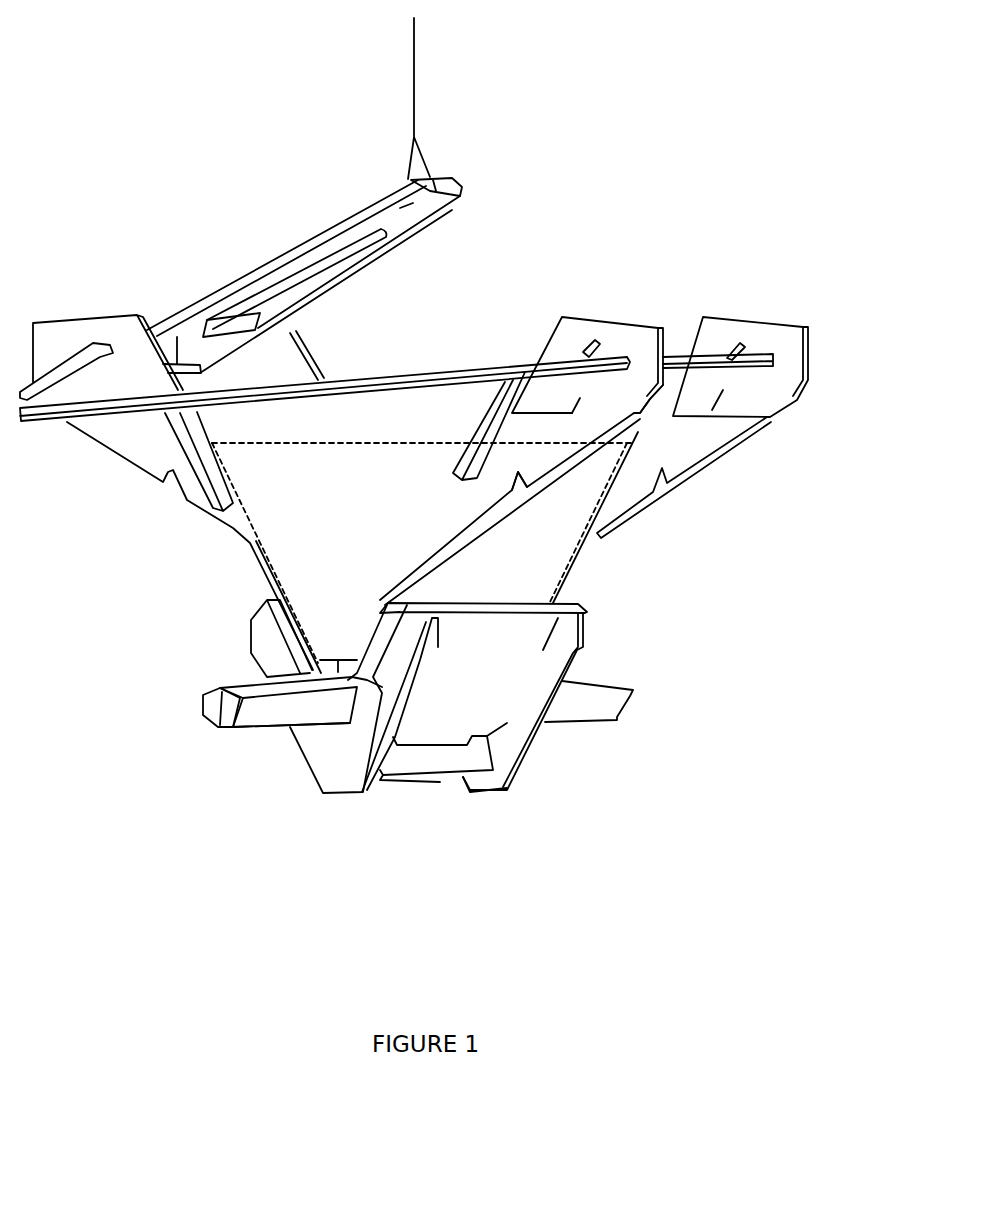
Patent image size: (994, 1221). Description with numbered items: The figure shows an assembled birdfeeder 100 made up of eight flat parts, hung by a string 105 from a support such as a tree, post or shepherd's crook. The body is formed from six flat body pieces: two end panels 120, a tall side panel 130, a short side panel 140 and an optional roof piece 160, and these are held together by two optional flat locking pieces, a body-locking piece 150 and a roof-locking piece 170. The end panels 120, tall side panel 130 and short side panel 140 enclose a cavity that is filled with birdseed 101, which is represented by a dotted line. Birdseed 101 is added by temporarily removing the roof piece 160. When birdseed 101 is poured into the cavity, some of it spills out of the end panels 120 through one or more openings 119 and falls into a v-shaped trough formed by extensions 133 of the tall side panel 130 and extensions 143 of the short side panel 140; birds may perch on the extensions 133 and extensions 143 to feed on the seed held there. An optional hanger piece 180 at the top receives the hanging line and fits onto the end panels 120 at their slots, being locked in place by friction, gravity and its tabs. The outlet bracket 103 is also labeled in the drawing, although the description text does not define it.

The birdfeeder 100 is at (342, 545).
The birdseed 101 is at (358, 443).
The outlet bracket 103 is at (228, 688).
The string 105 is at (414, 72).
The opening 119 is at (341, 670).
The end panel 120 is at (572, 317).
The tall side panel 130 is at (687, 413).
The extension 133 is at (268, 728).
The short side panel 140 is at (255, 547).
The extension 143 is at (206, 714).
The body-locking piece 150 is at (482, 605).
The roof piece 160 is at (332, 378).
The roof-locking piece 170 is at (683, 417).
The hanger piece 180 is at (335, 222).